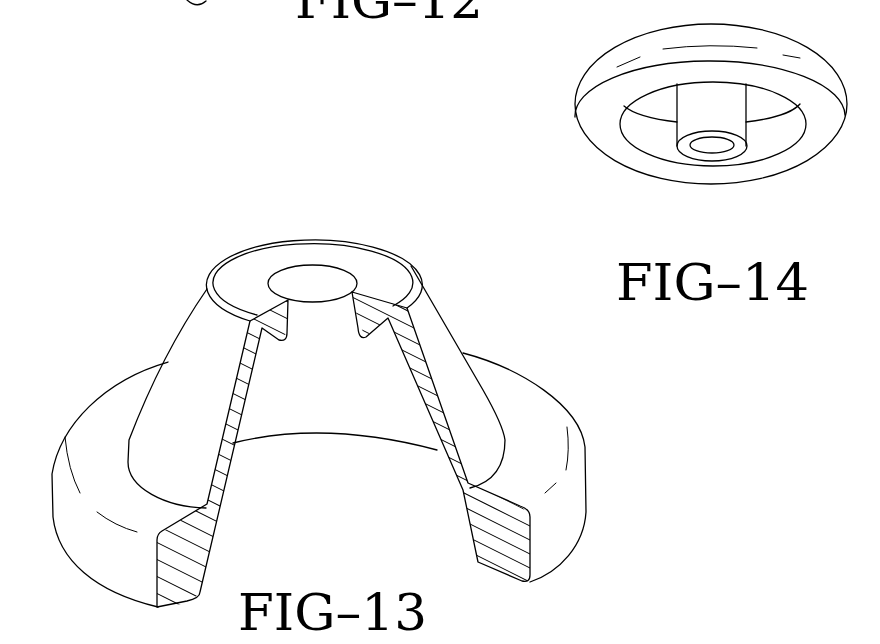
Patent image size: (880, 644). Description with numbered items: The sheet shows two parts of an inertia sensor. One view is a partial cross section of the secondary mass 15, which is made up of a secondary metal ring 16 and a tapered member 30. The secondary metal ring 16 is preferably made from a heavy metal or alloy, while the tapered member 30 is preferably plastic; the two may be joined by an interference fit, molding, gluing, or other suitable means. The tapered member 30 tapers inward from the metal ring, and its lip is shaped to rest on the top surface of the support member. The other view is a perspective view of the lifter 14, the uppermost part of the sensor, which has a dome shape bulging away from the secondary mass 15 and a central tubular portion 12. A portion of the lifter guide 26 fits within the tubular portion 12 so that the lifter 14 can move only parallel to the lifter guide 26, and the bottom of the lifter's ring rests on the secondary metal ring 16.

In FIG. 14, the tubular portion 12 is at (736, 116).
In FIG. 14, the lifter 14 is at (600, 125).
In FIG. 13, the secondary mass 15 is at (477, 372).
In FIG. 13, the secondary metal ring 16 is at (565, 517).
In FIG. 14, the lifter guide 26 is at (711, 146).
In FIG. 13, the tapered member 30 is at (166, 392).